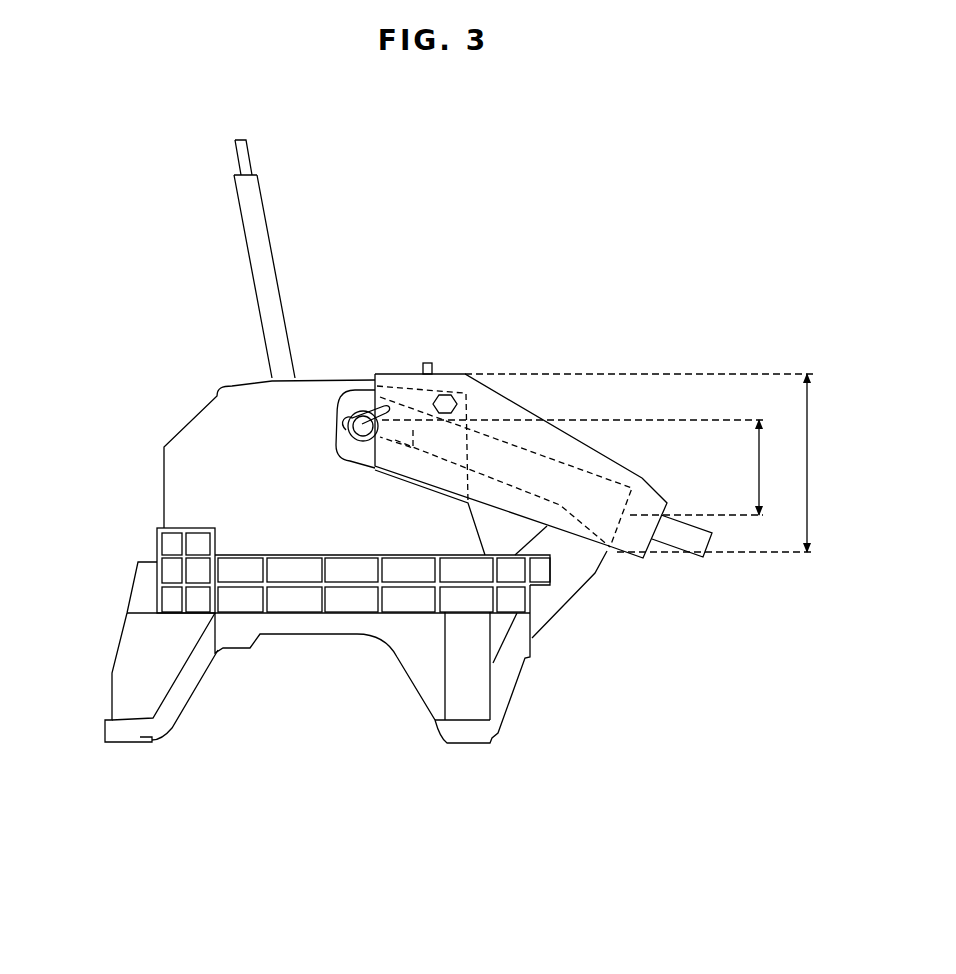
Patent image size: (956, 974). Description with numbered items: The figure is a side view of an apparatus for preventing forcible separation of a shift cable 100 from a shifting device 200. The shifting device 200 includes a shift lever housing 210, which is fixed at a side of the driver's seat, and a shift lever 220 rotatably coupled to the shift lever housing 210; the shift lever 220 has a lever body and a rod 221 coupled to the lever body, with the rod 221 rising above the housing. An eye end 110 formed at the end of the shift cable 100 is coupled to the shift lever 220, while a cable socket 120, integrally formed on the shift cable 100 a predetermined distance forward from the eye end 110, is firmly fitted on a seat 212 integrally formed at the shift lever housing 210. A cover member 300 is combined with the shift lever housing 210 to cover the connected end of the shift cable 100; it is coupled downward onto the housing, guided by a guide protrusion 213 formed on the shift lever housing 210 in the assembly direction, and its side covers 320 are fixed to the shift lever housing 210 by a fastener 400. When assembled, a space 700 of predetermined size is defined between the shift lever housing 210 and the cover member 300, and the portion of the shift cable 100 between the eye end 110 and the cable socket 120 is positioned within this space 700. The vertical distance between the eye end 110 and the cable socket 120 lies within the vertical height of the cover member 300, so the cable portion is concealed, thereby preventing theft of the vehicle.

The shift cable 100 is at (485, 470).
The eye end 110 is at (356, 445).
The cable socket 120 is at (648, 503).
The shifting device 200 is at (136, 545).
The shift lever housing 210 is at (240, 635).
The seat 212 is at (572, 573).
The guide protrusion 213 is at (427, 362).
The shift lever 220 is at (241, 265).
The rod 221 is at (245, 197).
The cover member 300 is at (526, 401).
The side covers 320 is at (593, 577).
The fastener 400 is at (445, 396).
The space 700 is at (580, 453).